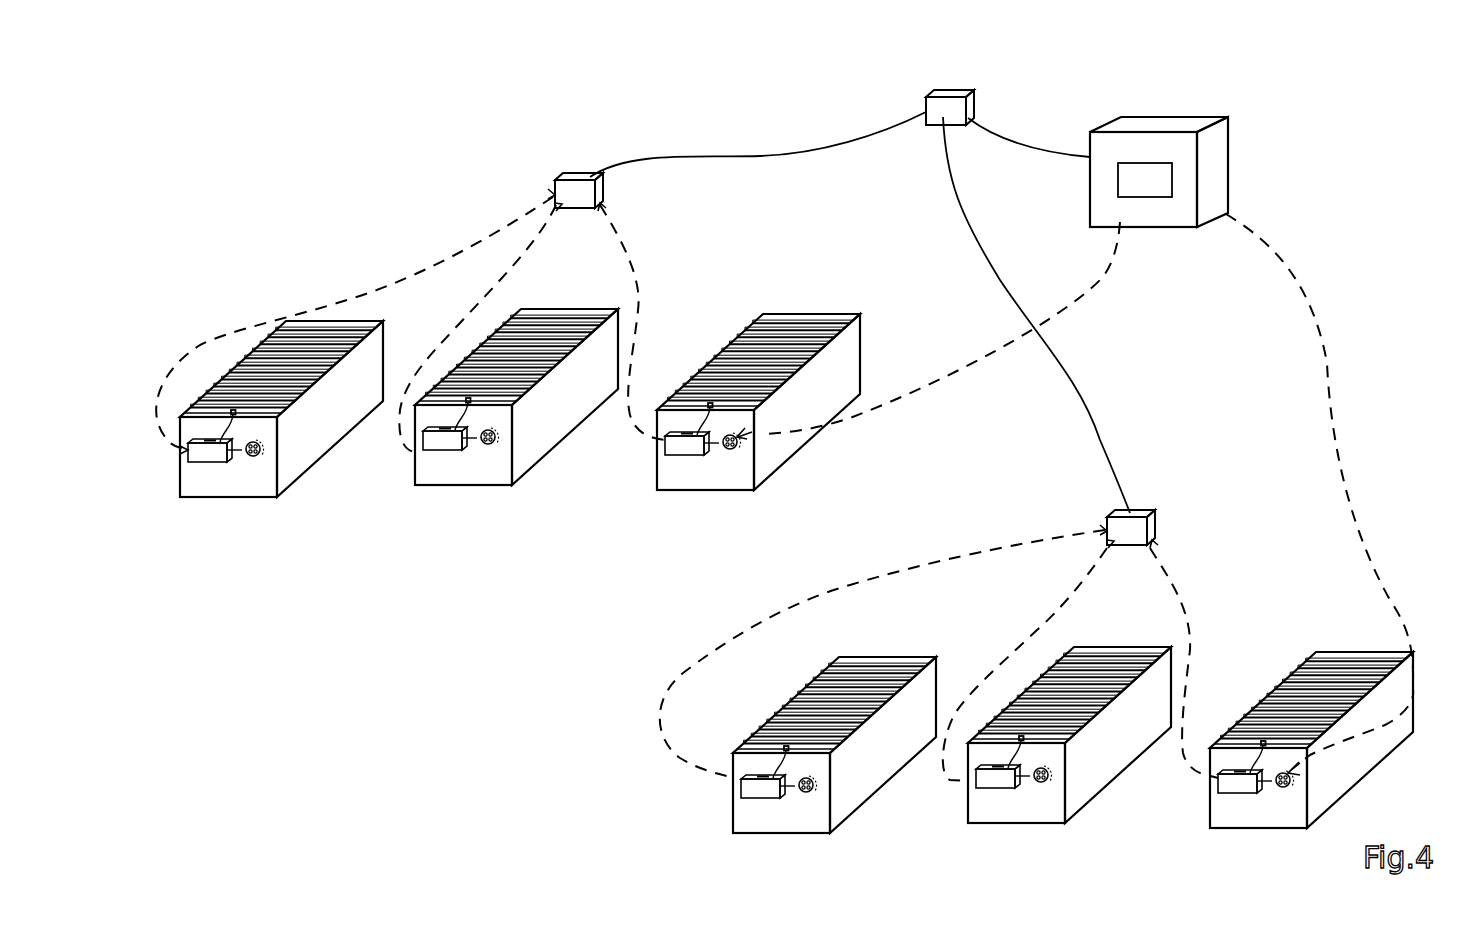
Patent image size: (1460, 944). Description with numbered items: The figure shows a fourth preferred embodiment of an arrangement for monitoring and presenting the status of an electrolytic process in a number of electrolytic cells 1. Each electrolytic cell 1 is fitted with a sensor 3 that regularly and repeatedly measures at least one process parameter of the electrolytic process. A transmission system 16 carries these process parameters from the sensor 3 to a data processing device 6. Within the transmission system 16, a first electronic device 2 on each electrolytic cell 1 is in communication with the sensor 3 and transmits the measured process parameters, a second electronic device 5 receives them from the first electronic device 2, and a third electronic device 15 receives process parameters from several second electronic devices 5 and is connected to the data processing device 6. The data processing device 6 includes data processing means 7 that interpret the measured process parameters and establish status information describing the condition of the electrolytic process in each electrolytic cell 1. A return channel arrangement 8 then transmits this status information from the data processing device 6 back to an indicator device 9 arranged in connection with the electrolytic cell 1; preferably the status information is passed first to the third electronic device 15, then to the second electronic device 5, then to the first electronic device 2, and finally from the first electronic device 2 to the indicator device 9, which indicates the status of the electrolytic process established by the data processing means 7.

The electrolytic cell 1 is at (180, 483).
The first electronic device 2 is at (203, 463).
The sensor 3 is at (238, 414).
The second electronic device 5 is at (568, 178).
The data processing device 6 is at (1167, 120).
The data processing means 7 is at (1170, 178).
The return channel arrangement 8 is at (1103, 276).
The indicator device 9 is at (253, 457).
The third electronic device 15 is at (968, 107).
The transmission system 16 is at (392, 148).